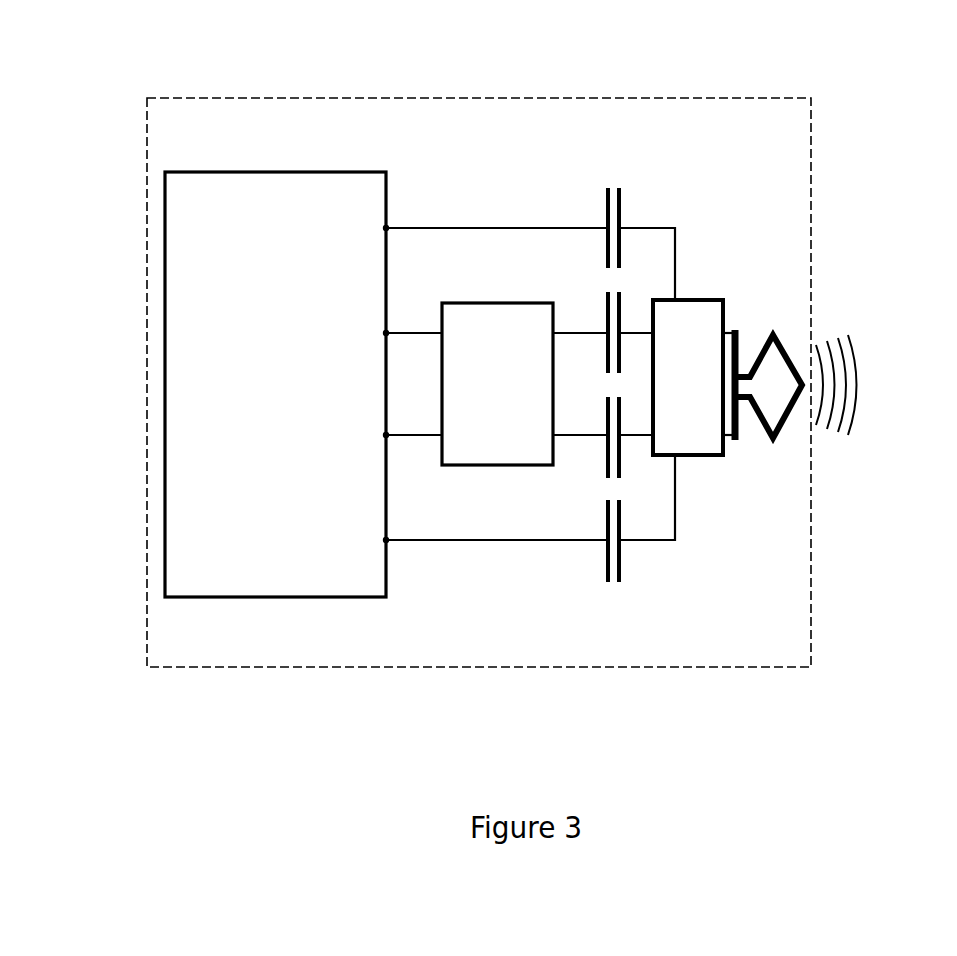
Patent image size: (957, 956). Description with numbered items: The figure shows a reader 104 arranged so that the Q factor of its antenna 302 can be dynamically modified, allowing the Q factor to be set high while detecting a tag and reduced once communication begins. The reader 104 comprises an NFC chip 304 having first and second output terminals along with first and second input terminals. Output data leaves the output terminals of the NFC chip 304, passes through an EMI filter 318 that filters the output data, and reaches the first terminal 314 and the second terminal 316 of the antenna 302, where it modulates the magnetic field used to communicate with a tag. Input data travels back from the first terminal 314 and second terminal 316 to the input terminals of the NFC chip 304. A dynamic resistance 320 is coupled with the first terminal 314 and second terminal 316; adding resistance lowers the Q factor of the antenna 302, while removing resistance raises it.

The reader 104 is at (478, 97).
The NFC chip 304 is at (272, 171).
The EMI filter 318 is at (497, 384).
The dynamic resistance 320 is at (705, 312).
The first terminal 314 is at (738, 327).
The second terminal 316 is at (725, 460).
The antenna 302 is at (797, 450).